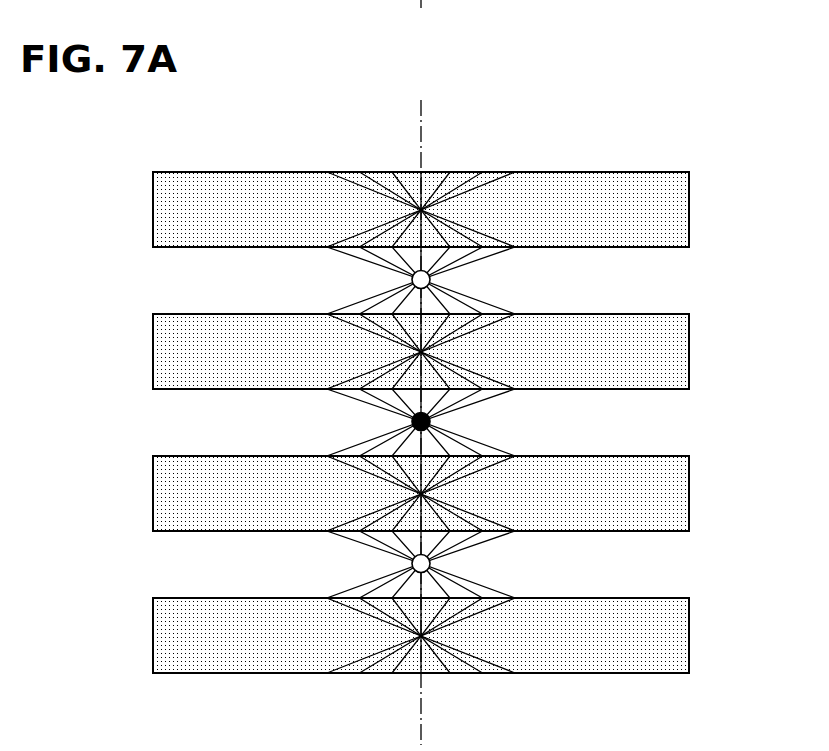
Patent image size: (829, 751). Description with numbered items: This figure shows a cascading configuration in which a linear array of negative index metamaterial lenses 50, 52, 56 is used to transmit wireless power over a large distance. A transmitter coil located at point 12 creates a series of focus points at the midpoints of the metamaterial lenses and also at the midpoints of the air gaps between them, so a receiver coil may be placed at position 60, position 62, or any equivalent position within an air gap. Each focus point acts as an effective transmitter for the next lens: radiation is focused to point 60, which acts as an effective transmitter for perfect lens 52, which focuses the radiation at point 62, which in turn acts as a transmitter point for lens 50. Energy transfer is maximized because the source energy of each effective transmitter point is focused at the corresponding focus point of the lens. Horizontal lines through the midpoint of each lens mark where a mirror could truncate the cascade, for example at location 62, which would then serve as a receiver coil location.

The metamaterial lens 50 is at (165, 208).
The metamaterial lens 52 is at (167, 360).
The metamaterial lens 56 is at (167, 627).
The focus point / receiver position 62 is at (431, 277).
The focus point / receiver position 60 is at (431, 419).
The transmitter coil point 12 is at (431, 561).